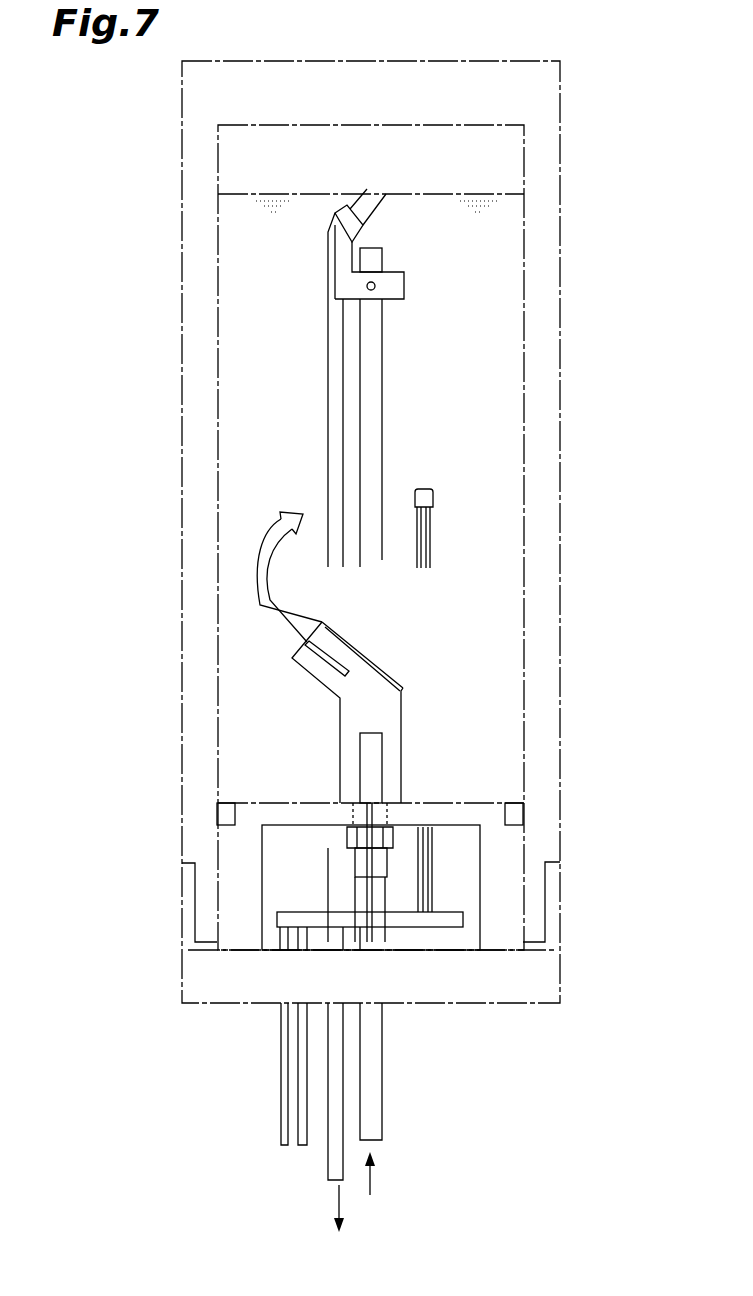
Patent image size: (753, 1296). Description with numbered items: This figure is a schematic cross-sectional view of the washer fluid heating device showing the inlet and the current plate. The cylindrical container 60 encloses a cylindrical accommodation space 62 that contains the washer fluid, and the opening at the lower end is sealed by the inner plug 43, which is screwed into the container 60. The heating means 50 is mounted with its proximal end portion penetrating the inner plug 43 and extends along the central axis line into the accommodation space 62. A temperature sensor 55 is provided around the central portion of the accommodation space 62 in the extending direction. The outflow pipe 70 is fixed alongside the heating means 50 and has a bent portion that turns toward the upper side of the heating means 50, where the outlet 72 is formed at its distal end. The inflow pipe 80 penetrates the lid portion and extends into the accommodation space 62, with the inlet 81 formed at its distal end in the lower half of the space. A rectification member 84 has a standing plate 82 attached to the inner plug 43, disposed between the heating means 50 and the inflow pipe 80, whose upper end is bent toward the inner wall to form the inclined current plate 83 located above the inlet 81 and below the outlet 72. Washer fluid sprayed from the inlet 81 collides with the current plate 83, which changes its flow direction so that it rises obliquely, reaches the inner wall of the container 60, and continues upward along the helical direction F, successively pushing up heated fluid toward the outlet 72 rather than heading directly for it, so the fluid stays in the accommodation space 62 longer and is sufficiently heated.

The container 60 is at (562, 237).
The accommodation space 62 is at (477, 337).
The outflow pipe 70 is at (327, 385).
The outlet 72 is at (367, 189).
The heating means 50 is at (383, 368).
The temperature sensor 55 is at (433, 494).
The helical direction F is at (268, 531).
The rectification member 84 is at (478, 712).
The current plate 83 is at (385, 665).
The standing plate 82 is at (390, 700).
The inlet 81 is at (375, 733).
The inflow pipe 80 is at (383, 768).
The inner plug 43 is at (500, 877).